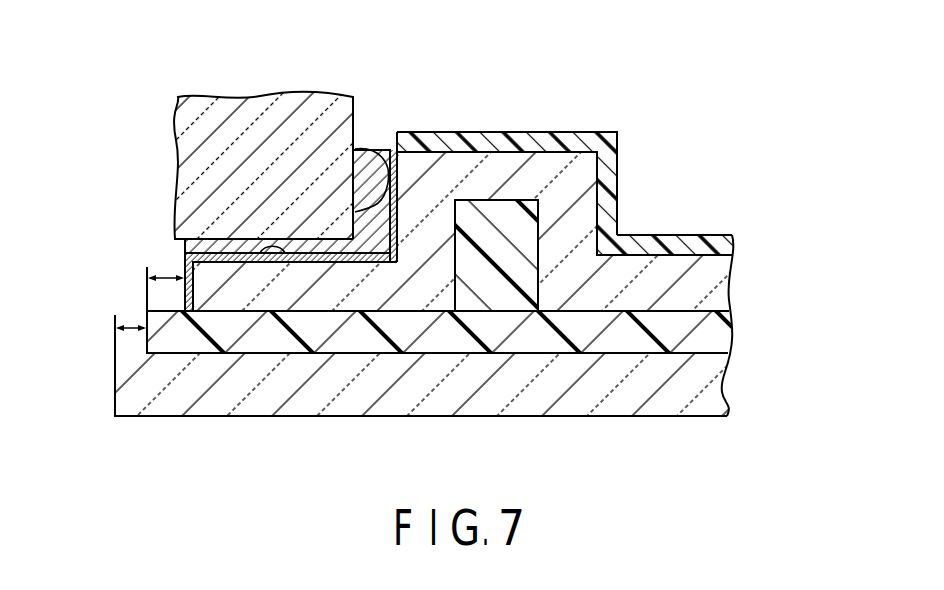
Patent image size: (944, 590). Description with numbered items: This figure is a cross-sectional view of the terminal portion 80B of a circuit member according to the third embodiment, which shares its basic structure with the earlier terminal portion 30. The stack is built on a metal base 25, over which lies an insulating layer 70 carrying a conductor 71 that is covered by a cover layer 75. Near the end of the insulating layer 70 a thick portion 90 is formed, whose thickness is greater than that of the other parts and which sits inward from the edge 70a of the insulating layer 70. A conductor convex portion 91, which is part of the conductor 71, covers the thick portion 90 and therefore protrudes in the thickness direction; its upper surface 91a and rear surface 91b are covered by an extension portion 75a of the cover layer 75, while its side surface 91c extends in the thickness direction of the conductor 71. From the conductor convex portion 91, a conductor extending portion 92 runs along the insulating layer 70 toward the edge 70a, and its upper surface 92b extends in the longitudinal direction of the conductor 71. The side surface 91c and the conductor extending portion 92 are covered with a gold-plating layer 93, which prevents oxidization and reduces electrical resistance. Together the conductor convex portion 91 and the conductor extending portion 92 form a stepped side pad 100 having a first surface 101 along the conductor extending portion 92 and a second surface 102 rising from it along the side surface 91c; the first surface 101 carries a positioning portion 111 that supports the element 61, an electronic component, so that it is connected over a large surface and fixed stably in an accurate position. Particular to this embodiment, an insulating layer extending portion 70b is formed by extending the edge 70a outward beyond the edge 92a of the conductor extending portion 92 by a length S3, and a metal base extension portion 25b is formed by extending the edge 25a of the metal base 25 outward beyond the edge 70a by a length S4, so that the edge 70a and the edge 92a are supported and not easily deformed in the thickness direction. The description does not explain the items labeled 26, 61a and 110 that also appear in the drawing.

The metal base 25 is at (710, 390).
The edge of metal base 25a is at (115, 385).
The metal base extension portion 25b is at (205, 400).
The vibrating plate 26 is at (808, 217).
The terminal portion 30 is at (725, 220).
The element 61 is at (193, 138).
The side surface of protective substrate 61a is at (357, 147).
The insulating layer 70 is at (705, 338).
The edge of insulating layer 70a is at (145, 338).
The insulating layer extending portion 70b is at (162, 310).
The conductor 71 is at (720, 288).
The cover layer 75 is at (730, 244).
The extension portion of cover layer 75a is at (580, 133).
The terminal portion 80B is at (540, 107).
The thick portion 90 is at (503, 217).
The conductor convex portion 91 is at (548, 160).
The upper surface of conductor convex portion 91a is at (481, 156).
The rear surface of conductor convex portion 91b is at (598, 175).
The side surface of conductor convex portion 91c is at (393, 148).
The conductor extending portion 92 is at (370, 297).
The edge of conductor extending portion 92a is at (185, 296).
The upper surface of conductor extending portion 92b is at (242, 253).
The gold-plating layer 93 is at (245, 257).
The stepped side pad 100 is at (378, 233).
The first surface 101 is at (312, 246).
The second surface 102 is at (374, 168).
The connection bump 110 is at (386, 152).
The positioning portion 111 is at (287, 253).
The length S3 is at (178, 277).
The length S4 is at (122, 328).